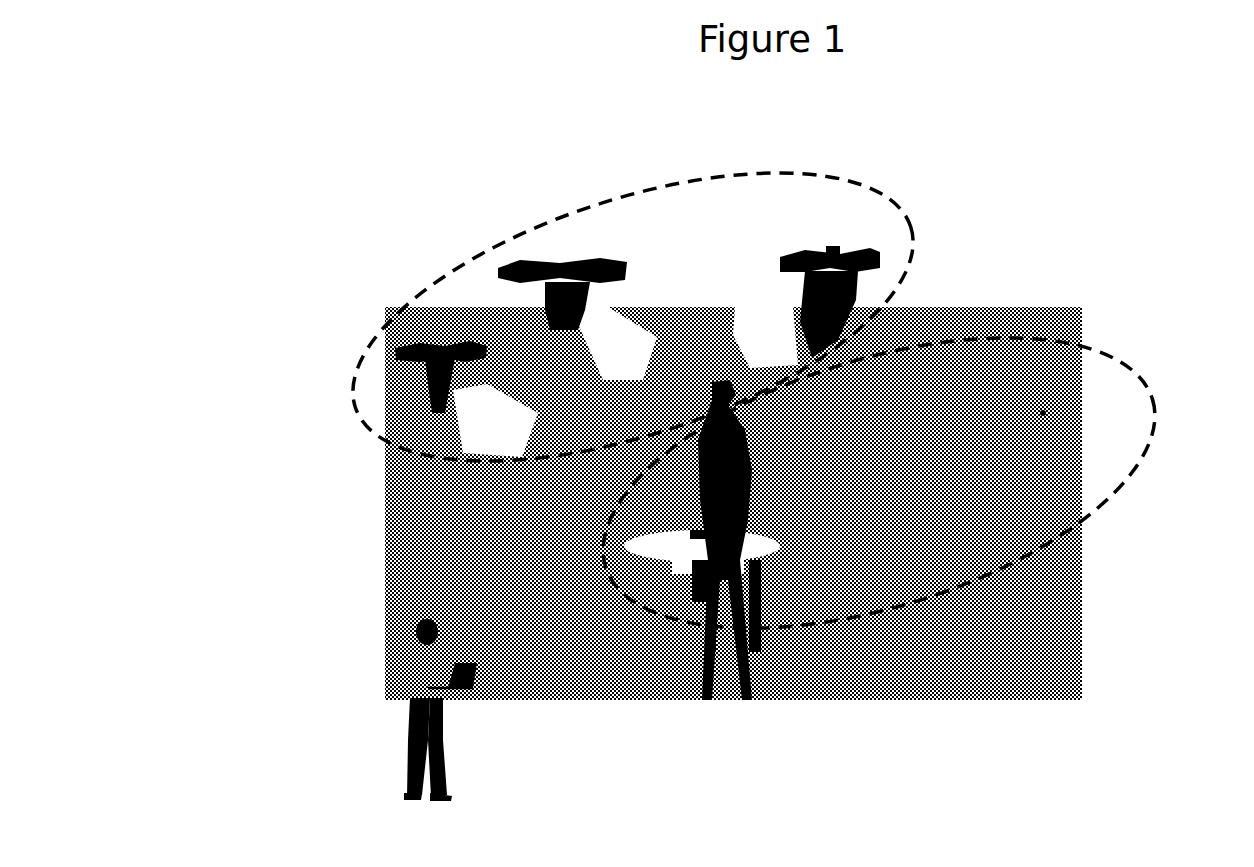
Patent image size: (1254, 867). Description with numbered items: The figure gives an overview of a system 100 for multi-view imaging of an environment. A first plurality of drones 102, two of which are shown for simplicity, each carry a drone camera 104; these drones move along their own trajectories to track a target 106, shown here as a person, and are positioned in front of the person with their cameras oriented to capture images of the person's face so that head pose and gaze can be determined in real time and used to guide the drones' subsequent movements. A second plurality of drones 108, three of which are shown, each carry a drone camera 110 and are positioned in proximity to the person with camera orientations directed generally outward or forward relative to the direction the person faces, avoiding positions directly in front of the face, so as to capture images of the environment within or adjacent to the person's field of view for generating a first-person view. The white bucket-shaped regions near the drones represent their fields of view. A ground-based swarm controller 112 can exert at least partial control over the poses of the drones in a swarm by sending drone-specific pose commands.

The system 100 is at (218, 186).
The first plurality of drones 102 is at (1078, 393).
The drone camera 104 is at (1043, 413).
The target 106 is at (723, 462).
The second plurality of drones 108 is at (790, 252).
The drone camera 110 is at (832, 250).
The ground-based swarm controller 112 is at (398, 660).